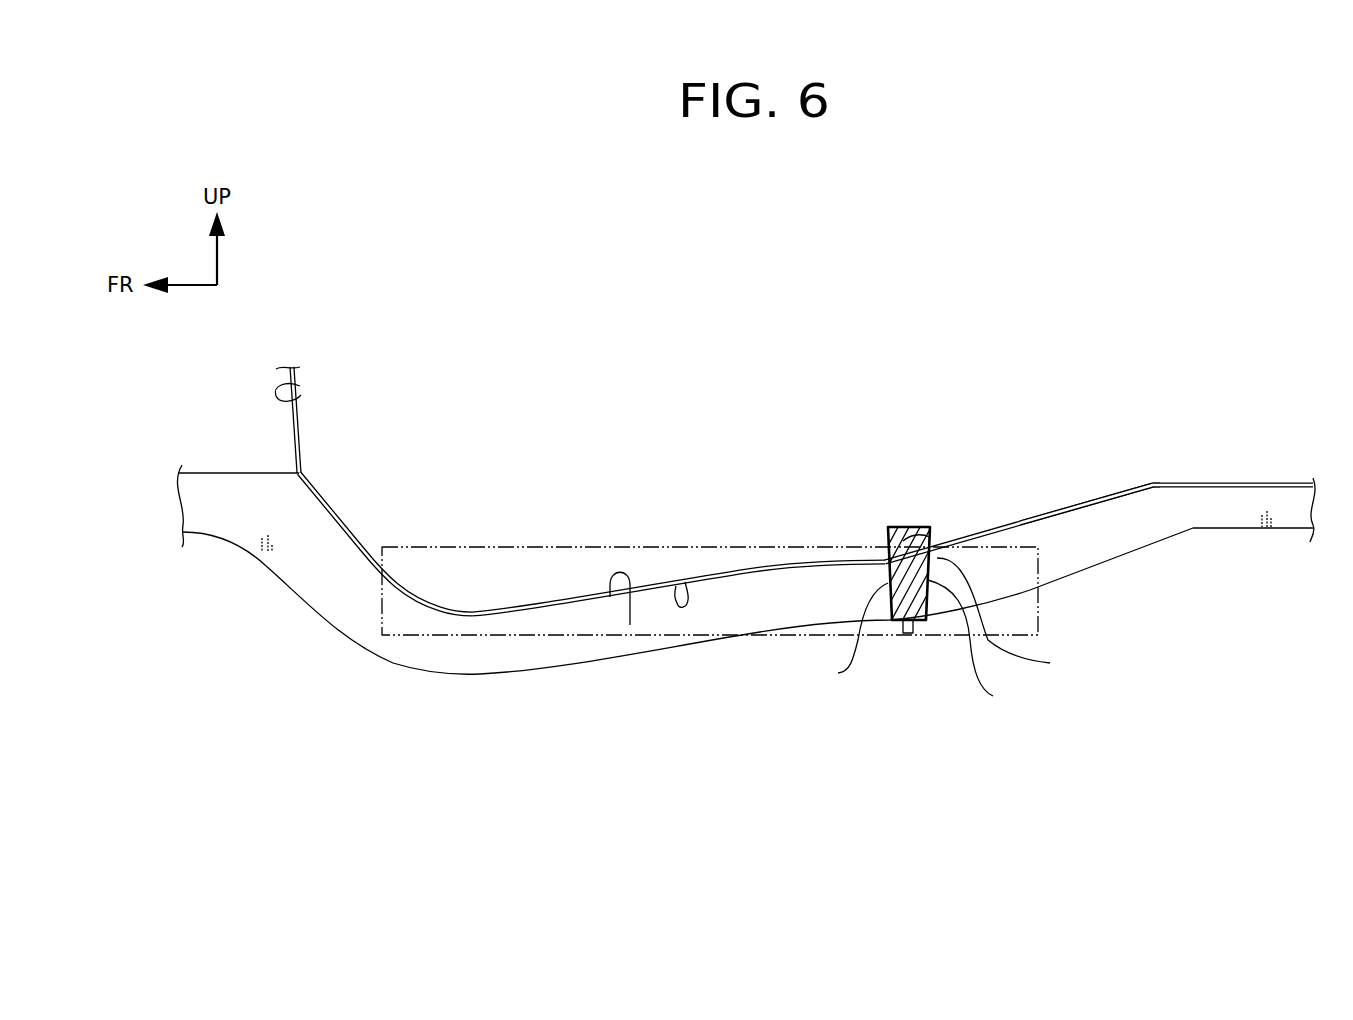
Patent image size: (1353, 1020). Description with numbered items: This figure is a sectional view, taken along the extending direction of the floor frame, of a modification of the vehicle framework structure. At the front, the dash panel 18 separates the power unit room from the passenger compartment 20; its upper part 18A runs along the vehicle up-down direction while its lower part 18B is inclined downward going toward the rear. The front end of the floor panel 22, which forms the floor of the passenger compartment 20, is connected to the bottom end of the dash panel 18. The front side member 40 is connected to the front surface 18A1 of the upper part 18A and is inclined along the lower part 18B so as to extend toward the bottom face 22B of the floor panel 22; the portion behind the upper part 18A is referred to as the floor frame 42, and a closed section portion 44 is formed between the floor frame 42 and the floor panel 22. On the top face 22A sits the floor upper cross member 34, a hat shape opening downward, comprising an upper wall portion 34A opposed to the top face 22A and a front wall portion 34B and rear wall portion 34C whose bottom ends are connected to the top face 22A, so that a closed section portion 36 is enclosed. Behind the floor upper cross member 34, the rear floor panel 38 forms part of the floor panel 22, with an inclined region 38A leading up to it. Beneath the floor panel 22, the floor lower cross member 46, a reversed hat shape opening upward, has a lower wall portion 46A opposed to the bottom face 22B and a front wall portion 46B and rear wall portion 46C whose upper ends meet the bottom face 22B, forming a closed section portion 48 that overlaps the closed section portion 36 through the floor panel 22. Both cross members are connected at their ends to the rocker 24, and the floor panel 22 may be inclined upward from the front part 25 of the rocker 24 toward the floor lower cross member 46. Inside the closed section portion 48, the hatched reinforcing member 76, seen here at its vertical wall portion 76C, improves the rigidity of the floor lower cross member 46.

The dash panel 18 is at (373, 486).
The upper part of the dash panel 18A is at (300, 419).
The front surface of the upper part of the dash panel 18A1 is at (300, 387).
The lower part of the dash panel 18B is at (330, 503).
The passenger compartment 20 is at (709, 395).
The floor panel 22 is at (560, 602).
The top face of the floor panel 22A is at (630, 625).
The bottom face of the floor panel 22B is at (685, 582).
The rocker 24 is at (491, 538).
The front part of the rocker 25 is at (412, 613).
The floor upper cross member 34 is at (912, 516).
The upper wall portion of the floor upper cross member 34A is at (890, 527).
The front wall portion of the floor upper cross member 34B is at (888, 555).
The rear wall portion of the floor upper cross member 34C is at (913, 538).
The closed section portion (fourth closed section portion) 36 is at (927, 533).
The rear floor panel 38 is at (1200, 482).
The inclined portion 38A is at (1123, 490).
The front side member 40 is at (219, 466).
The floor frame 42 is at (472, 688).
The closed section portion (second closed section portion) 44 is at (745, 612).
The floor lower cross member 46 is at (915, 657).
The lower wall portion of the floor lower cross member 46A is at (910, 626).
The front wall portion of the floor lower cross member 46B is at (835, 636).
The rear wall portion of the floor lower cross member 46C is at (987, 648).
The closed section portion (first closed section portion) 48 is at (940, 557).
The vertical wall portion of the reinforcing member 76C is at (1045, 620).
The reinforcing member 76 is at (1045, 620).